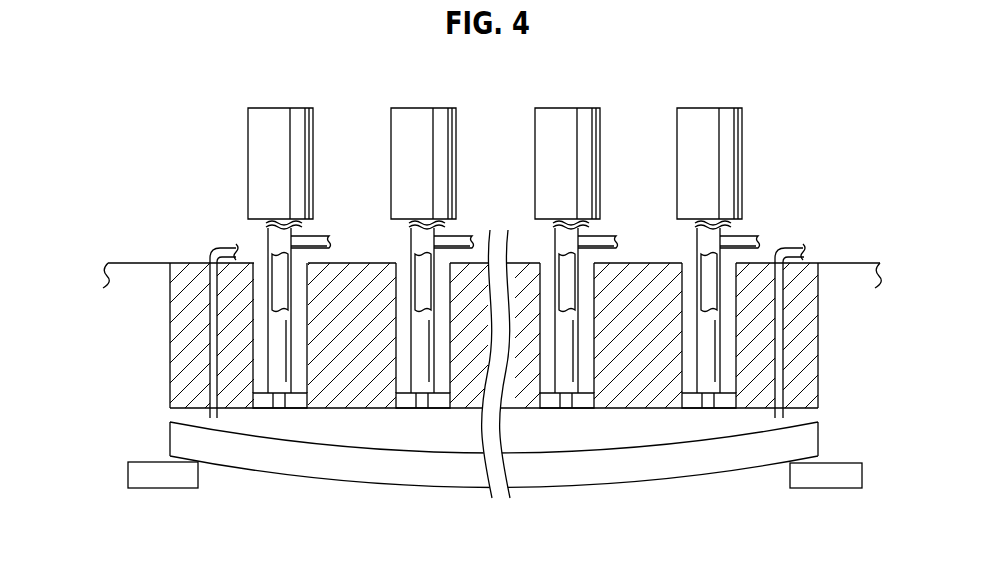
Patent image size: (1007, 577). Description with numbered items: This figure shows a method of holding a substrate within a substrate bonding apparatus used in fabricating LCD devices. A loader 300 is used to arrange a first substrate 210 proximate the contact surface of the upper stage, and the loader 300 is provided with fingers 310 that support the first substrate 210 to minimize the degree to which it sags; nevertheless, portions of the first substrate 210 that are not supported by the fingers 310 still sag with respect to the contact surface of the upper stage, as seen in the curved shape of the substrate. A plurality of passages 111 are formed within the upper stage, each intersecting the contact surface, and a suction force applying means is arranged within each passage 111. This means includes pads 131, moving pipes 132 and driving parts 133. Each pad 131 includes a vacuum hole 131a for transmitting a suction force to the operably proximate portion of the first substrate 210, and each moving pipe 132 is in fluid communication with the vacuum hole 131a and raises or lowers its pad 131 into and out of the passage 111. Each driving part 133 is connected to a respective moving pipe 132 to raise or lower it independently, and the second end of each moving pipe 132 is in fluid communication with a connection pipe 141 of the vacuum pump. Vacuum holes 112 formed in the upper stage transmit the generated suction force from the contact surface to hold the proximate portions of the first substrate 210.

The passage 111 is at (262, 287).
The vacuum hole 112 is at (778, 326).
The pad 131 is at (408, 400).
The vacuum hole 131a is at (283, 412).
The moving pipe 132 is at (277, 352).
The driving part 133 is at (263, 160).
The connection pipe 141 is at (318, 240).
The first substrate 210 is at (347, 463).
The loader 300 is at (487, 341).
The finger 310 is at (824, 478).